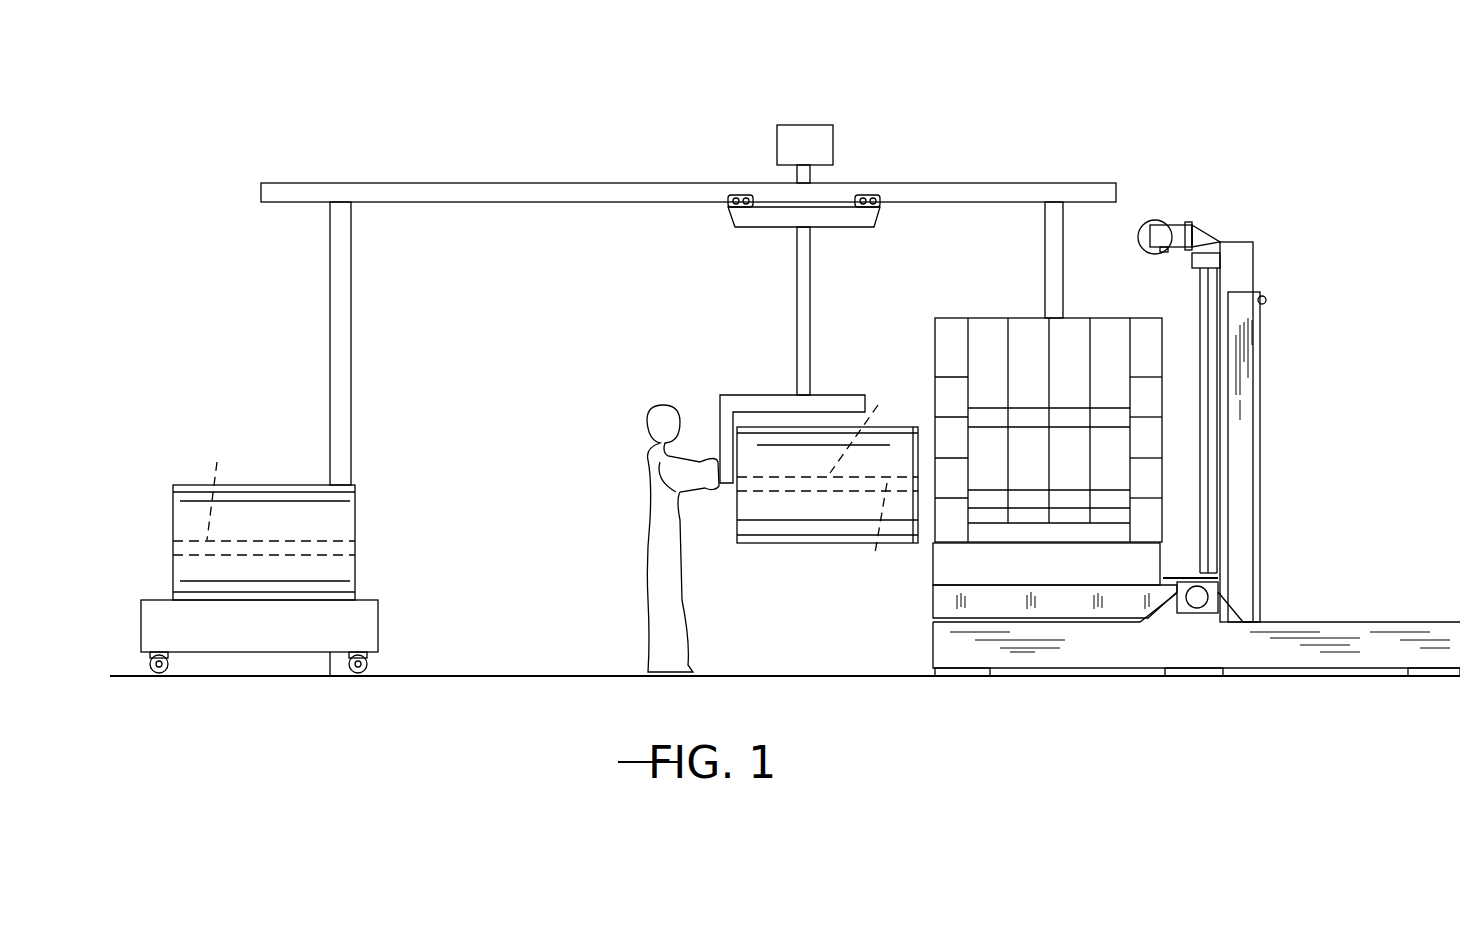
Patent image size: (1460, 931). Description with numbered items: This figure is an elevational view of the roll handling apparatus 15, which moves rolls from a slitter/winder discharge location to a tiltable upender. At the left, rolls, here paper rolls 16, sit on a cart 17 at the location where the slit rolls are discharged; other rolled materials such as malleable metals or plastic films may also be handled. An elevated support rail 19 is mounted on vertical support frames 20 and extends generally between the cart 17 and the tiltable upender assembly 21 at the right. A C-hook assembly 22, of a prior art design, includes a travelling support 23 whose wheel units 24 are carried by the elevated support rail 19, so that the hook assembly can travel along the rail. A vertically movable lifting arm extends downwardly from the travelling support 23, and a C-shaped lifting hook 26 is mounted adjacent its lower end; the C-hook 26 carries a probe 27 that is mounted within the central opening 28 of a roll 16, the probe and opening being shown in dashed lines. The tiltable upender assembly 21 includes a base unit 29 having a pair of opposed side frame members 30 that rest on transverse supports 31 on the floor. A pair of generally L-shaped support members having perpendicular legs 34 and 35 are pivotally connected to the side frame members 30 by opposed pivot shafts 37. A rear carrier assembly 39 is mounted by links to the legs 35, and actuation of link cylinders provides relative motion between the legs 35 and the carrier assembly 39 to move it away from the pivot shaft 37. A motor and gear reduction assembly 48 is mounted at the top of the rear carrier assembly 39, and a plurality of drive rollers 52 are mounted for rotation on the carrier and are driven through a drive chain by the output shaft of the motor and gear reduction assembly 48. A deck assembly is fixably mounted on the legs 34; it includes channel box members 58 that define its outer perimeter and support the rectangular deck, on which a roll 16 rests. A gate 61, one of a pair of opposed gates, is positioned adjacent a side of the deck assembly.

The roll handling apparatus 15 is at (978, 183).
The paper rolls 16 is at (795, 543).
The cart 17 is at (250, 652).
The elevated support rail 19 is at (478, 183).
The vertical support frames 20 is at (352, 290).
The tiltable upender assembly 21 is at (1268, 405).
The C-hook assembly 22 is at (795, 322).
The travelling support 23 is at (753, 227).
The wheel units 24 is at (740, 195).
The C-shaped lifting hook 26 is at (832, 397).
The probe 27 is at (873, 428).
The central opening 28 is at (542, 516).
The base unit 29 is at (1383, 622).
The side frame members 30 is at (1300, 640).
The transverse supports 31 is at (958, 677).
The legs 34 is at (1055, 615).
The legs 35 is at (1262, 452).
The pivot shafts 37 is at (1190, 612).
The rear carrier assembly 39 is at (1253, 280).
The motor and gear reduction assembly 48 is at (1156, 222).
The drive rollers 52 is at (1200, 290).
The channel box members 58 is at (1072, 580).
The gate 61 is at (1027, 352).